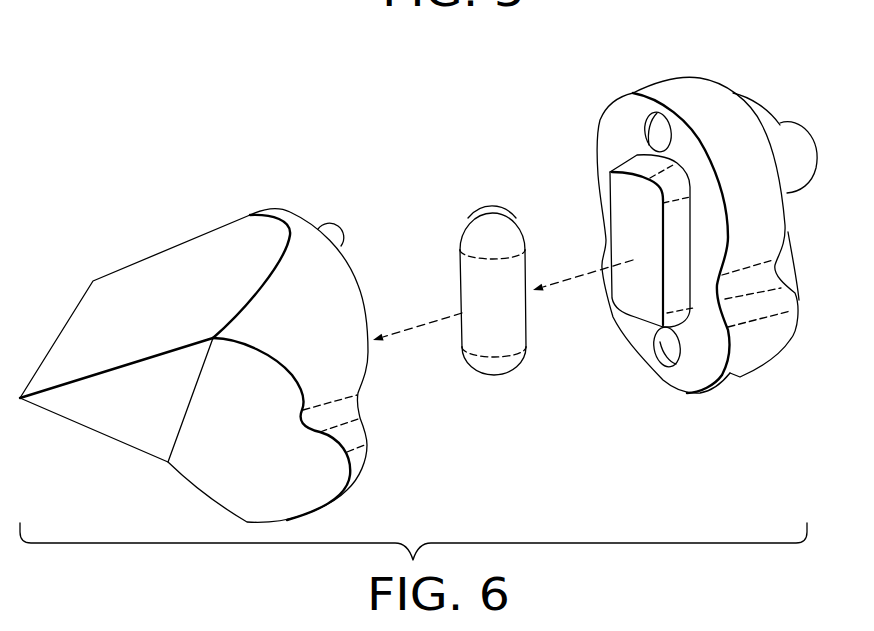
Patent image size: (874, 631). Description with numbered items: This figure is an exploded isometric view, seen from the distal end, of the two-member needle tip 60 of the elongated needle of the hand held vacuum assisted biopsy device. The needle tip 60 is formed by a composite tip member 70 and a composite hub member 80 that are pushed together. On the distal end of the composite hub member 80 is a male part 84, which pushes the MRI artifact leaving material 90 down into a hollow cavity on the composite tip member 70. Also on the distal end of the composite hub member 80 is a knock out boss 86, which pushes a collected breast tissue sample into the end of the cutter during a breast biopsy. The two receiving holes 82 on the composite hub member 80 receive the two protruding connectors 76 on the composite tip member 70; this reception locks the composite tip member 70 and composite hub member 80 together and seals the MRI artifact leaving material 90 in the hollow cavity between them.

The needle tip 60 is at (419, 135).
The composite tip member 70 is at (163, 228).
The protruding connectors 76 is at (336, 228).
The composite hub member 80 is at (677, 68).
The receiving holes 82 is at (650, 138).
The male part 84 is at (630, 197).
The knock out boss 86 is at (798, 142).
The MRI artifact leaving material 90 is at (468, 200).